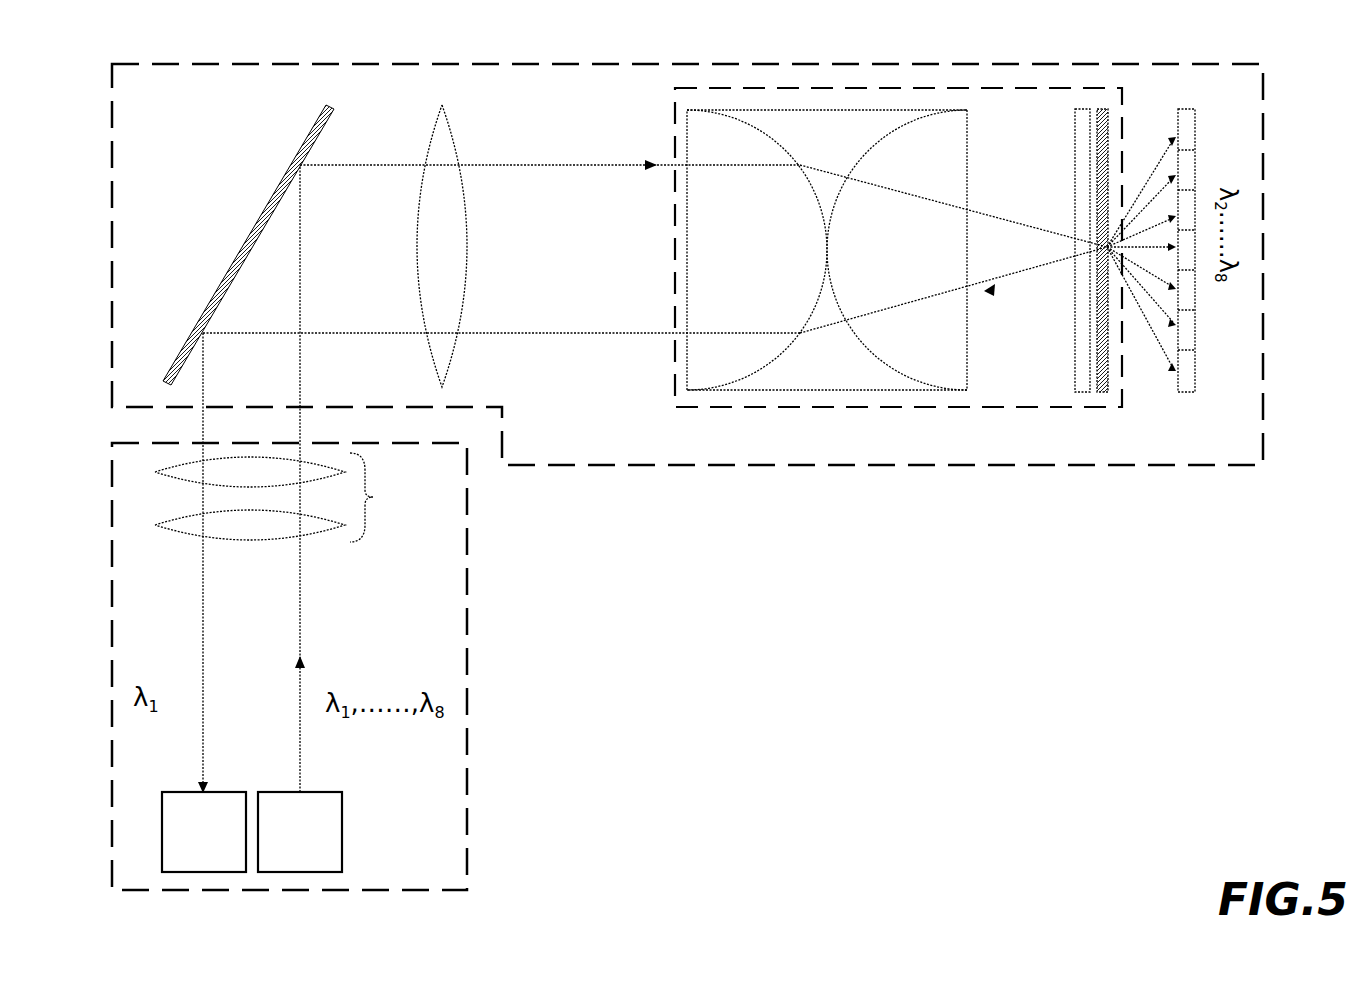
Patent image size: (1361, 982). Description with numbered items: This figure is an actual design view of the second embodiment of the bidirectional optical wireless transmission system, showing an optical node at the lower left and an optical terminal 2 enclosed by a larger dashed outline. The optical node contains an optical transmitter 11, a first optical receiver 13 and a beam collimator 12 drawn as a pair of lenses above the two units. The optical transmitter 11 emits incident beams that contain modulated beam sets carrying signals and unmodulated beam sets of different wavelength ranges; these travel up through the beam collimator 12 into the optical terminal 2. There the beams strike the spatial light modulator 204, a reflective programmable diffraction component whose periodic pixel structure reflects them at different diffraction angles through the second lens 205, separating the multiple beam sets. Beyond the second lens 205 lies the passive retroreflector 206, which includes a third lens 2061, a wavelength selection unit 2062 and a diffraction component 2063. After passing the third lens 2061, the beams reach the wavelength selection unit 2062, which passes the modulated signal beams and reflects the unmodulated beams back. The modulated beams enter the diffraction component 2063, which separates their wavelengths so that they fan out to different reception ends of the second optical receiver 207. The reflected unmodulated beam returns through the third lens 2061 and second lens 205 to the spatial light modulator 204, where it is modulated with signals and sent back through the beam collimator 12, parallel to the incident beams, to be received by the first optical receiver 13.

The optical terminal 2 is at (1263, 343).
The optical transmitter 11 is at (342, 843).
The beam collimator 12 is at (373, 497).
The first optical receiver 13 is at (162, 840).
The spatial light modulator 204 is at (247, 240).
The second lens 205 is at (437, 122).
The passive retroreflector 206 is at (980, 407).
The third lens 2061 is at (839, 165).
The wavelength selection unit 2062 is at (1083, 110).
The diffraction component 2063 is at (1102, 110).
The second optical receiver 207 is at (1195, 160).